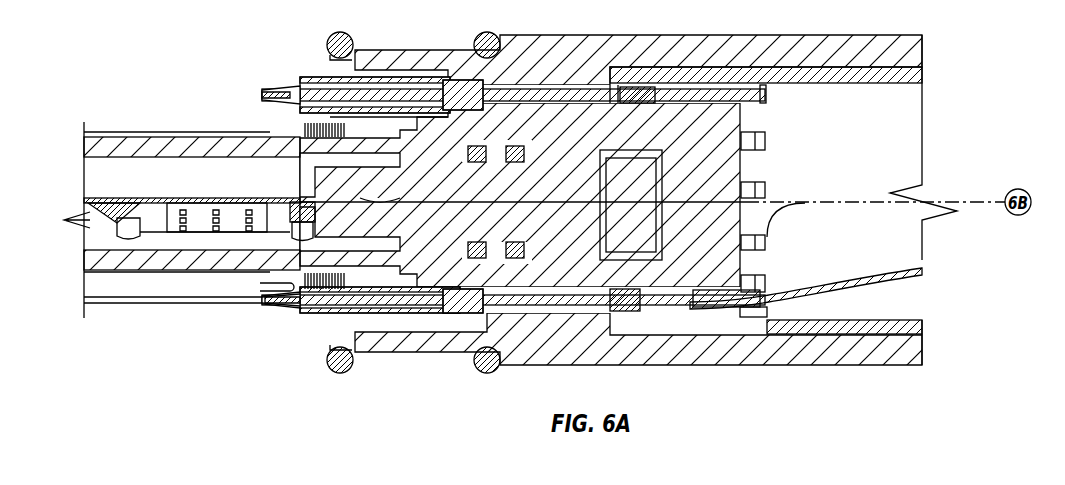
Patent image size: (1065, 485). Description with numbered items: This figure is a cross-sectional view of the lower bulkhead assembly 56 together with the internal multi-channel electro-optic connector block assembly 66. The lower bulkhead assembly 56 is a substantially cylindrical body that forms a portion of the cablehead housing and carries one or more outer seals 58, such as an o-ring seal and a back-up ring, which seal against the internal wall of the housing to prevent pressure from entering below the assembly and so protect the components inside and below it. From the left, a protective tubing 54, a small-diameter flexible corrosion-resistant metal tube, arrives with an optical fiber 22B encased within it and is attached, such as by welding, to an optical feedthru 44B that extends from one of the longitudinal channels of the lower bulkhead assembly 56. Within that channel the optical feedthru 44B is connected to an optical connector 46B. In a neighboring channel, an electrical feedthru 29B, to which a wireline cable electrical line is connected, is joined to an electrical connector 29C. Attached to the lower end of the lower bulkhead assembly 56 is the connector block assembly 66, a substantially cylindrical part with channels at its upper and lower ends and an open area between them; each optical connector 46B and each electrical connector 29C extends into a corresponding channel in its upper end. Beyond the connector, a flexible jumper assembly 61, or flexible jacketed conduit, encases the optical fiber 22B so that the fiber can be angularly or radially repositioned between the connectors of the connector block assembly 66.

The optical fiber 22B is at (338, 315).
The electrical feedthru 29B is at (315, 77).
The electrical connector 29C is at (729, 85).
The optical feedthru 44B is at (409, 307).
The optical connector 46B is at (680, 305).
The protective tubing 54 is at (103, 304).
The lower bulkhead assembly 56 is at (642, 37).
The outer seal 58 is at (348, 371).
The flexible jumper assembly 61 is at (848, 282).
The connector block assembly 66 is at (852, 68).